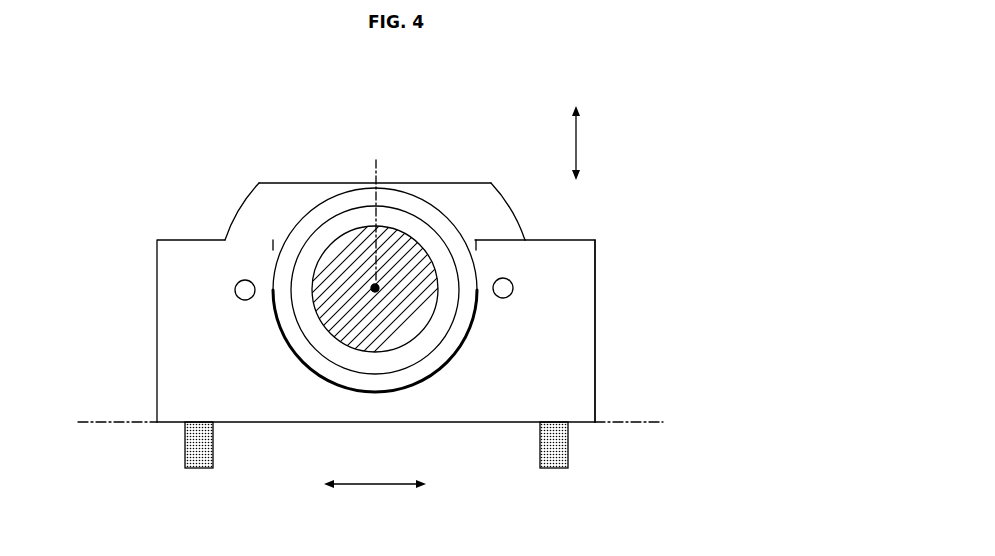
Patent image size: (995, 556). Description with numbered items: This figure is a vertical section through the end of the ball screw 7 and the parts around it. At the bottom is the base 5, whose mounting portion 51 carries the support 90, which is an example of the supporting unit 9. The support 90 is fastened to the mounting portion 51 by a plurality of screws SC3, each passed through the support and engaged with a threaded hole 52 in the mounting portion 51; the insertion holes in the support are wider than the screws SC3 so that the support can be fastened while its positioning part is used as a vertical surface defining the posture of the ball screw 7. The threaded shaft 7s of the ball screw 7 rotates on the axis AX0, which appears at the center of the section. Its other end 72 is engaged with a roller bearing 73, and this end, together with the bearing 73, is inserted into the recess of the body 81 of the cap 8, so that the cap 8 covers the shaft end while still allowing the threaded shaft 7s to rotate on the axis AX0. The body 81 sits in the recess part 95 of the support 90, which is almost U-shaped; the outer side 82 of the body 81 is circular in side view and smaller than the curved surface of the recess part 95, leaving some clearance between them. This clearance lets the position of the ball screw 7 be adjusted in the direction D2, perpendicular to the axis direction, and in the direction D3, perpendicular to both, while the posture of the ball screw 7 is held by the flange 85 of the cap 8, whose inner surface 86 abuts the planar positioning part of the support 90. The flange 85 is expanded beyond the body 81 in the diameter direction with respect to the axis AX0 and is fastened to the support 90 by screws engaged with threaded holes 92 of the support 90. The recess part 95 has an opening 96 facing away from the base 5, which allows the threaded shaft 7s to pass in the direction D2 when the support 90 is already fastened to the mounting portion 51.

The base 5 is at (660, 421).
The mounting portion 51 is at (583, 418).
The threaded hole 52 is at (190, 440).
The ball screw 7 is at (479, 242).
The threaded shaft 7s is at (310, 307).
The other end 72 is at (479, 242).
The roller bearing 73 is at (479, 242).
The cap 8 is at (375, 251).
The body 81 is at (375, 251).
The outer side 82 is at (345, 193).
The flange 85 is at (372, 189).
The inner surface 86 is at (485, 205).
The opening 96 is at (243, 203).
The supporting unit 9 is at (588, 305).
The support 90 is at (601, 237).
The threaded hole 92 is at (238, 287).
The recess part 95 is at (445, 338).
The axis AX0 is at (384, 211).
The direction D2 is at (589, 143).
The direction D3 is at (375, 494).
The screw SC3 is at (195, 470).